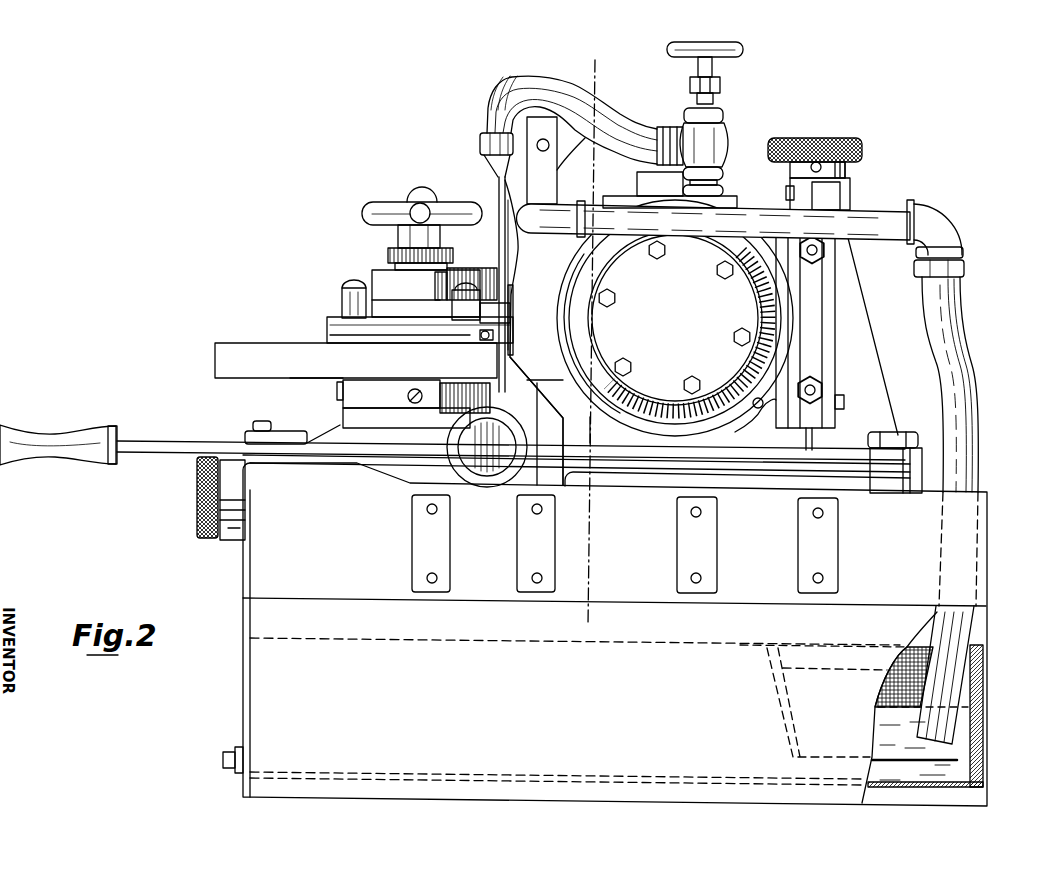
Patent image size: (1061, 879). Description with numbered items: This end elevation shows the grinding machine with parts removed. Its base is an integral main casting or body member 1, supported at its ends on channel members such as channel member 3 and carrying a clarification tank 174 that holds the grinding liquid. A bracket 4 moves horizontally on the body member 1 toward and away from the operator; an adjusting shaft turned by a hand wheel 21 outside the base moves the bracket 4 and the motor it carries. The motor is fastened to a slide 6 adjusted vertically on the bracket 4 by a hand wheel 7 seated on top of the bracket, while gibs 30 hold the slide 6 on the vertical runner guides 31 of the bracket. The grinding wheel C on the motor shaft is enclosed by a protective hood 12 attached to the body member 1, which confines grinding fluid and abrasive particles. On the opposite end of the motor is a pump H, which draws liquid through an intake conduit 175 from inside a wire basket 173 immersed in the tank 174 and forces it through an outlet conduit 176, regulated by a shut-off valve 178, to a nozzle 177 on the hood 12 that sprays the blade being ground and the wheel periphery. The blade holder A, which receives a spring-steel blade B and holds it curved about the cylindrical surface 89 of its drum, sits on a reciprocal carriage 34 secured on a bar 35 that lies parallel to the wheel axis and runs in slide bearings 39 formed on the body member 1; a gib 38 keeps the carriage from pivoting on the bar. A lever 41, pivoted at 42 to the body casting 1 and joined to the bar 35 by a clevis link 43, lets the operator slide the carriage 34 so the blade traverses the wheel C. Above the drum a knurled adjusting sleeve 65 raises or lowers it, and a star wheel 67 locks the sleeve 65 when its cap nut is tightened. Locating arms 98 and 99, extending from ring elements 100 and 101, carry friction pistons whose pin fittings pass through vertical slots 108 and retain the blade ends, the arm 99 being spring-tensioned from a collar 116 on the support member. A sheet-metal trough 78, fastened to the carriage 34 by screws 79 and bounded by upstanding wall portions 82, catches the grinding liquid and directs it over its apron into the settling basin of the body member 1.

The main casting or body member 1 is at (985, 514).
The channel member 3 is at (604, 61).
The bracket 4 is at (858, 300).
The slide 6 is at (807, 367).
The hand wheel 7 is at (843, 141).
The protective hood 12 is at (735, 145).
The hand wheel 21 is at (197, 538).
The gibs 30 is at (825, 357).
The vertical runner guides 31 is at (818, 202).
The reciprocal carriage 34 is at (352, 418).
The bar 35 is at (457, 465).
The gib 38 is at (245, 432).
The slide bearings 39 is at (503, 417).
The lever 41 is at (143, 440).
The pivot 42 is at (895, 437).
The clevis link 43 is at (468, 470).
The rotatable adjusting sleeve 65 is at (387, 253).
The star wheel 67 is at (370, 203).
The trough 78 is at (297, 380).
The screws 79 is at (407, 397).
The wall portions 82 is at (215, 352).
The cylindrical surface 89 is at (398, 337).
The locating arm 98 is at (497, 312).
The locating arm 99 is at (343, 293).
The ring element 100 is at (423, 307).
The ring element 101 is at (413, 322).
The vertical slots 108 is at (477, 337).
The collar 116 is at (385, 275).
The wire basket 173 is at (967, 685).
The clarification tank 174 is at (970, 733).
The intake conduit 175 is at (979, 445).
The outlet conduit 176 is at (603, 127).
The nozzle 177 is at (498, 183).
The shut-off valve 178 is at (717, 123).
The blade holder A is at (371, 257).
The blade B is at (327, 327).
The grinding wheel C is at (510, 328).
The pump H is at (675, 318).